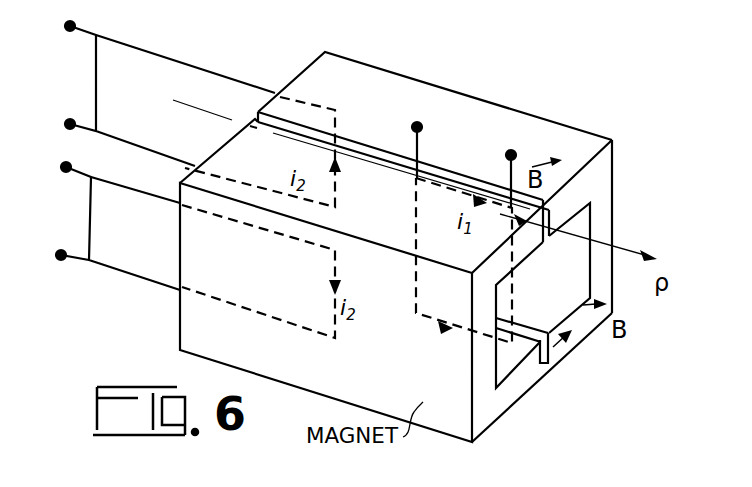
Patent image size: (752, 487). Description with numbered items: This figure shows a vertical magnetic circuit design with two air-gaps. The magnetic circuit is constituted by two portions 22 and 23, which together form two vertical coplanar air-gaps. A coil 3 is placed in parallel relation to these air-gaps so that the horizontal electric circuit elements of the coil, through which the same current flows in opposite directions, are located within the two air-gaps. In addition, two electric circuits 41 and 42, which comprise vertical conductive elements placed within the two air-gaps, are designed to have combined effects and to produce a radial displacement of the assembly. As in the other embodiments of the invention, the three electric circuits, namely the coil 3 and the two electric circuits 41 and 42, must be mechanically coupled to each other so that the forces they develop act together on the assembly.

The electric circuit 42 is at (97, 89).
The electric circuit 41 is at (89, 216).
The coil 3 is at (513, 298).
The portion of the magnetic circuit 22 is at (502, 412).
The portion of the magnetic circuit 23 is at (613, 186).